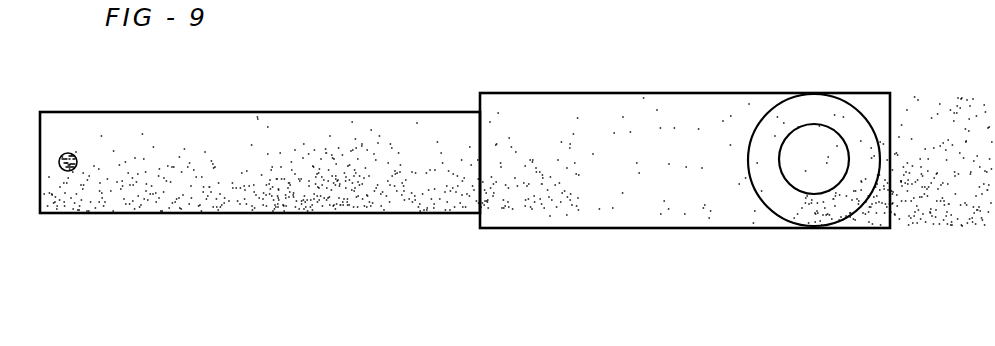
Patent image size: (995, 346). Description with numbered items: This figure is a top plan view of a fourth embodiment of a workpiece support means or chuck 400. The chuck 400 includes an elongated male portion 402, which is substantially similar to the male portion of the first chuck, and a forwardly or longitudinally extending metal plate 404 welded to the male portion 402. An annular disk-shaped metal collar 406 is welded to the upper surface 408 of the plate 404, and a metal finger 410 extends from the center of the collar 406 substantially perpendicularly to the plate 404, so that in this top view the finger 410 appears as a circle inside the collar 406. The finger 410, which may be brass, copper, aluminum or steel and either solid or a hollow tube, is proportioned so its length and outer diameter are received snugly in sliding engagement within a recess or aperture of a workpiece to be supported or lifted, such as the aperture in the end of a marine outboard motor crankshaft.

The workpiece support means or chuck 400 is at (439, 94).
The male portion 402 is at (243, 117).
The metal plate 404 is at (640, 112).
The annular disk-shaped metal collar 406 is at (775, 222).
The upper surface 408 is at (709, 116).
The metal finger 410 is at (783, 162).